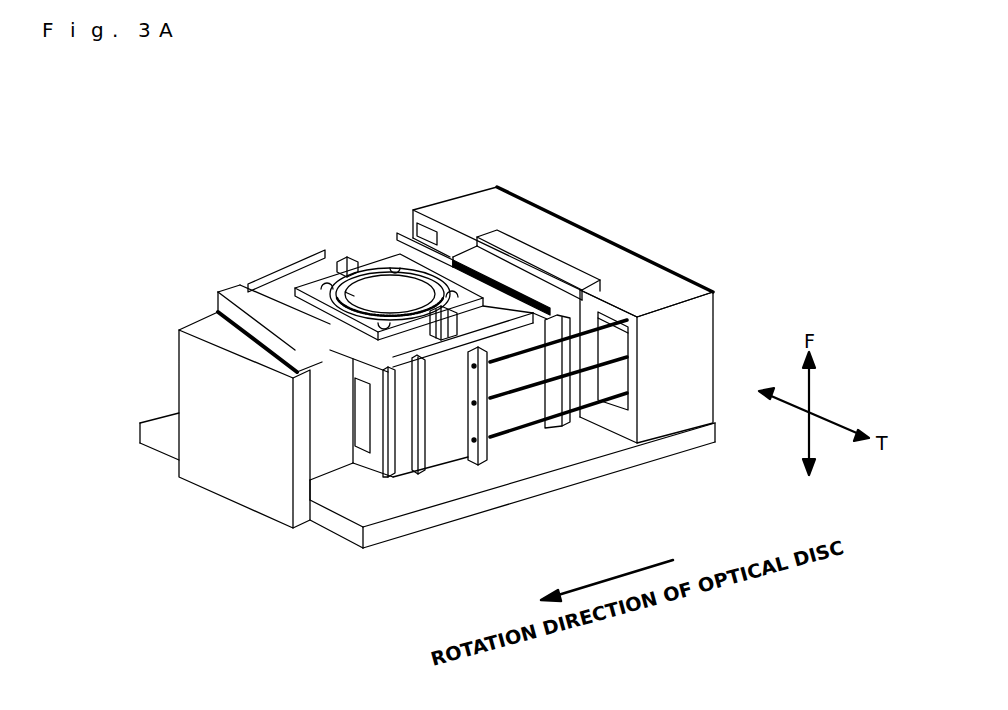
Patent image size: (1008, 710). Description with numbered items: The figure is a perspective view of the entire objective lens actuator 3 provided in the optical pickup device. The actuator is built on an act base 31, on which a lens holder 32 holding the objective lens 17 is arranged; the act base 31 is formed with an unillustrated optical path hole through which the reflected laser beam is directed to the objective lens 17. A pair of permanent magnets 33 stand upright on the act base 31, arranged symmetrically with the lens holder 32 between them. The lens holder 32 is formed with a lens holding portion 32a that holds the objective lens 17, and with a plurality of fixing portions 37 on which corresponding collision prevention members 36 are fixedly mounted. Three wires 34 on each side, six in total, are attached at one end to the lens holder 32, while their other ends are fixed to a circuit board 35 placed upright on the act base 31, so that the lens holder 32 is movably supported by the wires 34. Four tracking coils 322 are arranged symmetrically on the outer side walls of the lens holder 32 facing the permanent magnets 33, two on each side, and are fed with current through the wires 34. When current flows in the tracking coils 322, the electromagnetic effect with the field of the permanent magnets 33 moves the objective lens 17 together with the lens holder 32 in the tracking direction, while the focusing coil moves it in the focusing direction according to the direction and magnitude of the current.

The objective lens actuator 3 is at (201, 189).
The objective lens 17 is at (283, 297).
The act base 31 is at (622, 462).
The lens holder 32 is at (275, 275).
The lens holding portion 32a is at (433, 247).
The permanent magnets 33 is at (247, 327).
The wires 34 is at (520, 365).
The circuit board 35 is at (628, 238).
The collision prevention members 36 is at (420, 276).
The fixing portions 37 is at (322, 283).
The tracking coils 322 is at (380, 474).